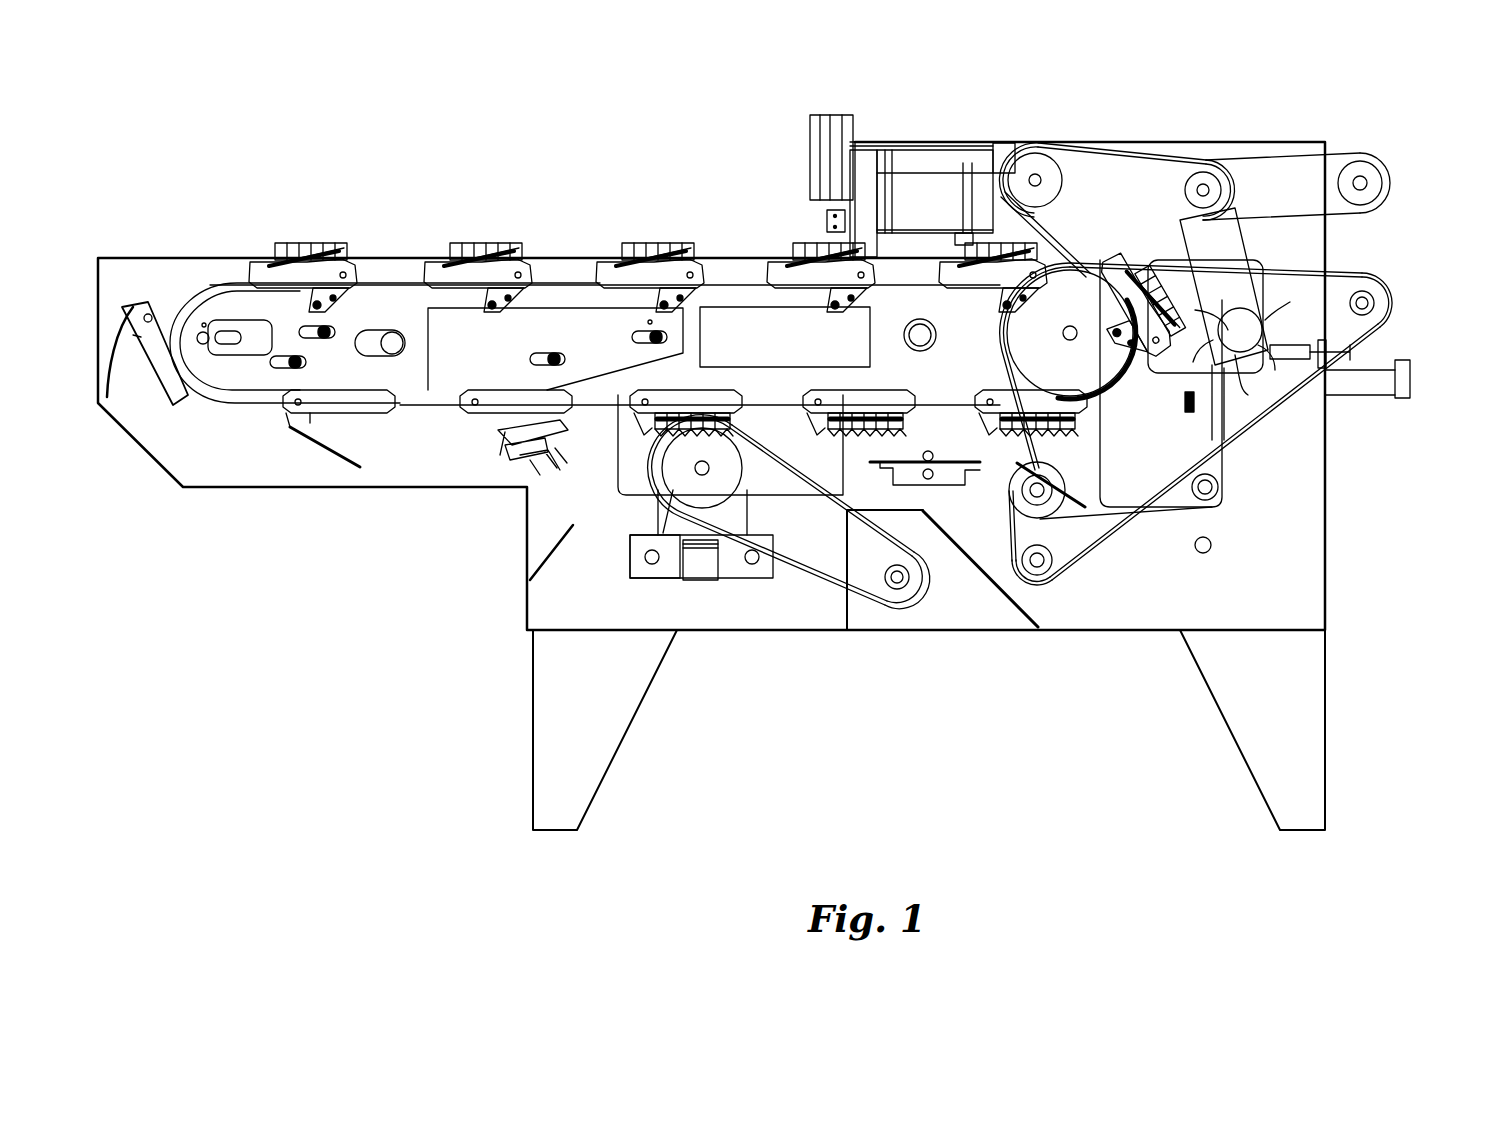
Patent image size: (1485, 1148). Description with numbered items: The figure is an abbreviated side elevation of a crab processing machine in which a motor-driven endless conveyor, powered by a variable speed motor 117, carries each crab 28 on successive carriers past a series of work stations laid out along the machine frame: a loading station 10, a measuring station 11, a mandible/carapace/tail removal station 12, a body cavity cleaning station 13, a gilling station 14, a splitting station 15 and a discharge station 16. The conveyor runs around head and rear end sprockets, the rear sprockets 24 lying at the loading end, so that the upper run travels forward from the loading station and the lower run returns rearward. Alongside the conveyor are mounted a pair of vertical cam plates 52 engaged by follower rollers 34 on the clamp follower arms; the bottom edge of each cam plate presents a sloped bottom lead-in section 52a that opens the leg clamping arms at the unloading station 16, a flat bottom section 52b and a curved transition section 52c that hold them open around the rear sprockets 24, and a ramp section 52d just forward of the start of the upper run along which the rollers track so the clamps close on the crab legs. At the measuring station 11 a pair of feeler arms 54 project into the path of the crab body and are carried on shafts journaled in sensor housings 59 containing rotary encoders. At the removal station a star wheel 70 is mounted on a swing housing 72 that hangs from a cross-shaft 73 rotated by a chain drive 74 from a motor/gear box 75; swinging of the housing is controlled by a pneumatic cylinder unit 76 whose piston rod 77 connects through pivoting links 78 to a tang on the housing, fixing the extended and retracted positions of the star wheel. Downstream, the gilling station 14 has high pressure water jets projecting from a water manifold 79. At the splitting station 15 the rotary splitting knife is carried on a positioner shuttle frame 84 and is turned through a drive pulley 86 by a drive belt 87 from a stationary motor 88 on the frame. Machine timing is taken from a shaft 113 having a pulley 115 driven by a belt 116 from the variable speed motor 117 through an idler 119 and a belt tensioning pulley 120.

The loading station 10 is at (177, 218).
The measuring station 11 is at (800, 195).
The mandible/carapace/tail removal station 12 is at (1160, 235).
The body cavity cleaning station 13 is at (1188, 428).
The gilling station 14 is at (963, 458).
The splitting station 15 is at (637, 478).
The discharge station 16 is at (542, 478).
The rear end sprockets 24 is at (178, 287).
The crab 28 is at (323, 242).
The follower rollers 34 is at (600, 380).
The vertical cam plates 52 is at (410, 377).
The sloped bottom lead-in section 52a is at (636, 278).
The flat bottom section 52b is at (277, 392).
The curved transition section 52c is at (237, 403).
The ramp section 52d is at (280, 257).
The feeler arms 54 is at (933, 217).
The sensor housing 59 is at (816, 125).
The star wheel 70 is at (1240, 458).
The swing housing 72 is at (1228, 250).
The cross-shaft 73 is at (1184, 190).
The chain drive 74 is at (1355, 200).
The motor/gear box 75 is at (1363, 205).
The solenoid-operated double-acting pneumatic cylinder unit 76 is at (1395, 370).
The piston rod 77 is at (1305, 360).
The pivoting links 78 is at (1303, 365).
The water manifold 79 is at (947, 480).
The positioner shuttle frame 84 is at (668, 577).
The drive pulley 86 is at (648, 537).
The drive belt 87 is at (808, 565).
The stationary motor 88 is at (900, 600).
The shaft 113 is at (1078, 332).
The pulley 115 is at (1012, 327).
The belt 116 is at (1110, 527).
The variable speed motor 117 is at (1372, 283).
The idler 119 is at (1020, 555).
The belt tensioning pulley 120 is at (1067, 500).